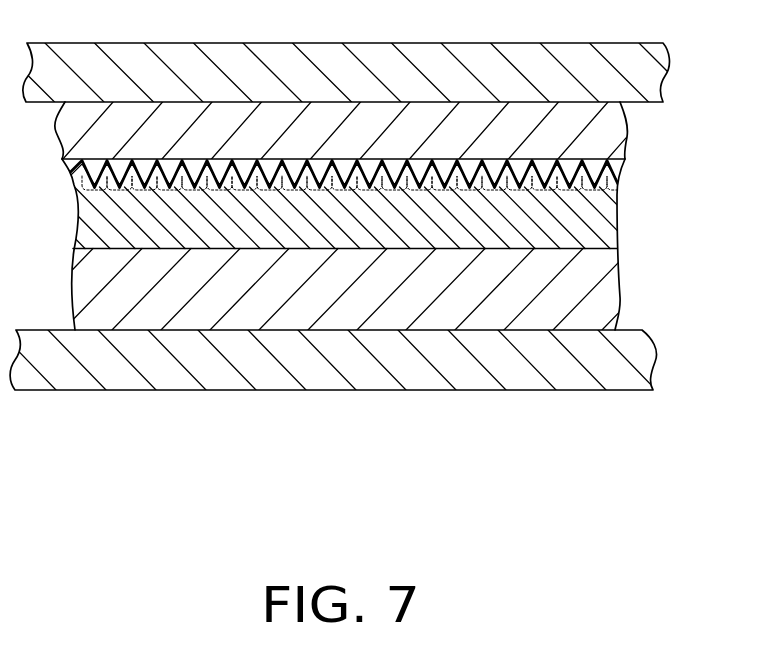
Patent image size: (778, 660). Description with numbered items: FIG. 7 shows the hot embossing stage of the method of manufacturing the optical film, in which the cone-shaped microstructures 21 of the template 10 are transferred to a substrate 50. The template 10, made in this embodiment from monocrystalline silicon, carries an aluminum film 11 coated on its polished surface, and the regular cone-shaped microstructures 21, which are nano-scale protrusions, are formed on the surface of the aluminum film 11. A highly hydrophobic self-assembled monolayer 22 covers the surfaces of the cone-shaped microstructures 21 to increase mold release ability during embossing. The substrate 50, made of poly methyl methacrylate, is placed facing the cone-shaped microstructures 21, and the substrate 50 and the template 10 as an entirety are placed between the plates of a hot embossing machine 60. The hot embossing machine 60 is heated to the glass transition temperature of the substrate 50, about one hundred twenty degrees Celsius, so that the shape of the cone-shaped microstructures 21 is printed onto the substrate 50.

The hot embossing machine 60 is at (633, 61).
The substrate 50 is at (608, 137).
The self-assembled monolayer 22 is at (612, 171).
The cone-shaped microstructures 21 is at (619, 181).
The aluminum film 11 is at (594, 224).
The template 10 is at (603, 303).